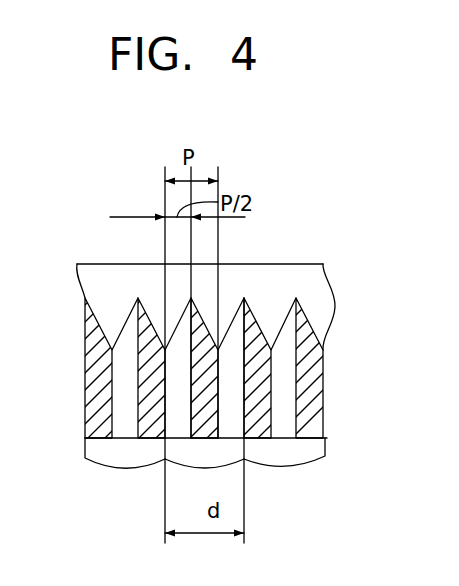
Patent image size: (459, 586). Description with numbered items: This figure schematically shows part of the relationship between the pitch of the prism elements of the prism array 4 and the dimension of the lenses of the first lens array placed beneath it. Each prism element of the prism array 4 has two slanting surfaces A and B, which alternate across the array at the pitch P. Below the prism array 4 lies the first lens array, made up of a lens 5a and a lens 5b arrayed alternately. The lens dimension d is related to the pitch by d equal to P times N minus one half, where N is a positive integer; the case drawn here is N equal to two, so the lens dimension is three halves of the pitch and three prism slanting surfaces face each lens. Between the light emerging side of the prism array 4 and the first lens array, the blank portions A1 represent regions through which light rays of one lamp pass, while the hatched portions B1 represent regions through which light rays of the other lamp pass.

The prism array 4 is at (314, 281).
The slanting surface A is at (124, 326).
The slanting surface B is at (208, 352).
The blank portion A1 is at (288, 338).
The hatched portion B1 is at (315, 373).
The lens 5a is at (210, 457).
The lens 5b is at (122, 457).